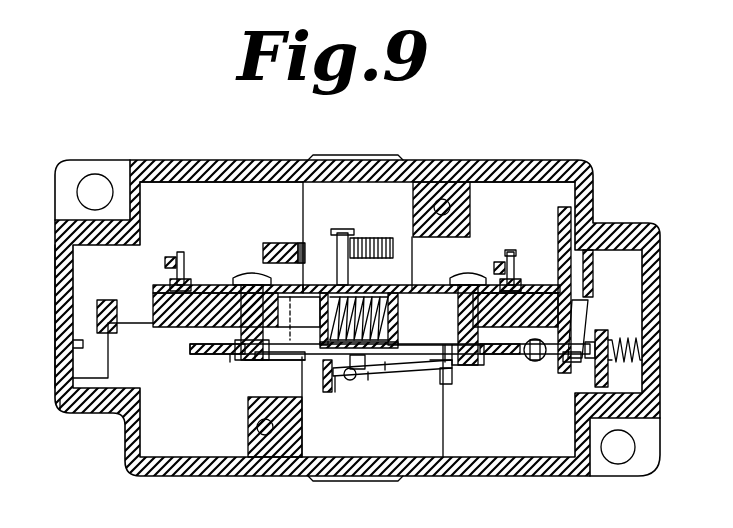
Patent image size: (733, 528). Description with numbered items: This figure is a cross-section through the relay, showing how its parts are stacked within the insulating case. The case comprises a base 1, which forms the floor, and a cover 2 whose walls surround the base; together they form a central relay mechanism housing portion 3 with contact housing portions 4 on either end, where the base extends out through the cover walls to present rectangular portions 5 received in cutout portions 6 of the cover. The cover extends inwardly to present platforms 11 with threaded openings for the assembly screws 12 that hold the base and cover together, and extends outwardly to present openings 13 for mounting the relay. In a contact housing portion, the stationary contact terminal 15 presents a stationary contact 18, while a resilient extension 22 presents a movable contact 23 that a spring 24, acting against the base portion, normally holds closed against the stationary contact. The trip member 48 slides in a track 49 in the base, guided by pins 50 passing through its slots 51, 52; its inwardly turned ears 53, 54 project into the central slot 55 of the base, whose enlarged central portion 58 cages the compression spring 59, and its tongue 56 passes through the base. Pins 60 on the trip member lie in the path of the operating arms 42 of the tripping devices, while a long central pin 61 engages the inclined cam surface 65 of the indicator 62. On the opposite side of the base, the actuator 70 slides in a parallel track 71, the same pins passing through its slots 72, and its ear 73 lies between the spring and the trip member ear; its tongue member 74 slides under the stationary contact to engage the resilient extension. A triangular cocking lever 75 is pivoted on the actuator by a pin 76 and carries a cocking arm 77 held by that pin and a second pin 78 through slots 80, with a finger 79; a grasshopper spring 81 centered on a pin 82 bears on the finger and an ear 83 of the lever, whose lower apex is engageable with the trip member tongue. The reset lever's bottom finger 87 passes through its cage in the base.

The base 1 is at (548, 190).
The cover 2 is at (200, 160).
The central relay mechanism housing portion 3 is at (497, 205).
The contact housing portions 4 is at (57, 262).
The rectangular portions 5 is at (57, 318).
The cutout portions 6 is at (58, 395).
The platforms 11 is at (472, 226).
The assembly screws 12 is at (442, 200).
The openings 13 is at (80, 192).
The stationary contact terminal 15 is at (592, 270).
The stationary contact 18 is at (565, 362).
The resilient extension 22 is at (660, 376).
The movable contact 23 is at (586, 360).
The spring 24 is at (636, 332).
The operating arm 42 is at (178, 255).
The trip member 48 is at (520, 282).
The track 49 is at (525, 292).
The pins 50 is at (245, 275).
The slot 51 is at (430, 290).
The slot 52 is at (215, 285).
The ear 53 is at (400, 300).
The ear 54 is at (280, 310).
The central slot 55 is at (267, 356).
The tongue 56 is at (263, 362).
The central portion 58 is at (385, 292).
The compression spring 59 is at (366, 292).
The pins 60 is at (518, 262).
The central pin 61 is at (343, 230).
The indicator 62 is at (282, 243).
The inclined cam surface 65 is at (380, 238).
The actuator 70 is at (225, 355).
The track 71 is at (228, 362).
The slots 72 is at (290, 354).
The ear 73 is at (292, 325).
The tongue member 74 is at (532, 360).
The cocking lever 75 is at (447, 358).
The pin 76 is at (347, 380).
The cocking arm 77 is at (388, 376).
The second pin 78 is at (384, 378).
The finger 79 is at (433, 385).
The slots 80 is at (356, 378).
The grasshopper spring 81 is at (368, 382).
The pin 82 is at (336, 393).
The ear 83 is at (326, 385).
The finger 87 is at (440, 368).